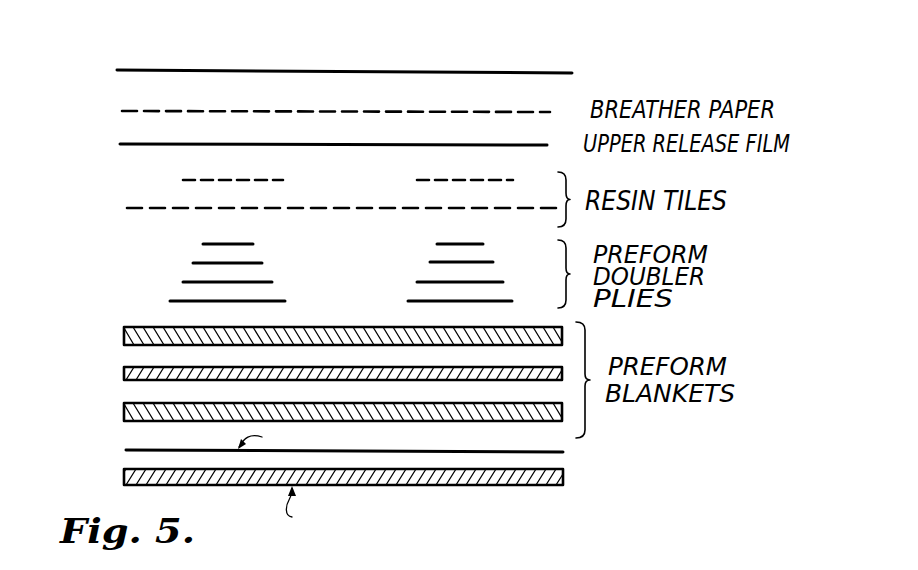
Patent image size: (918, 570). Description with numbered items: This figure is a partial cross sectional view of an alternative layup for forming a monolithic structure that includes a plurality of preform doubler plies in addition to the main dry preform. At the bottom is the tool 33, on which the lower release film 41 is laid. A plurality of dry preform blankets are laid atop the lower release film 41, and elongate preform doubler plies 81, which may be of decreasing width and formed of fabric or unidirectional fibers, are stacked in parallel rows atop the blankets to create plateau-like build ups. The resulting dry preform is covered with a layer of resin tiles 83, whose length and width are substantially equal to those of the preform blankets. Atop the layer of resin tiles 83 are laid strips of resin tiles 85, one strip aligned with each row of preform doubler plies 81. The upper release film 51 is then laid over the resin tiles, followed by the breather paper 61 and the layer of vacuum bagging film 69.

The vacuum bagging film 69 is at (538, 72).
The breather paper 61 is at (468, 112).
The upper release film 51 is at (518, 134).
The strips of resin tiles 85 is at (272, 179).
The layer of resin tiles 83 is at (327, 206).
The preform doubler plies 81 is at (251, 244).
The lower release film 41 is at (553, 453).
The tool 33 is at (563, 477).